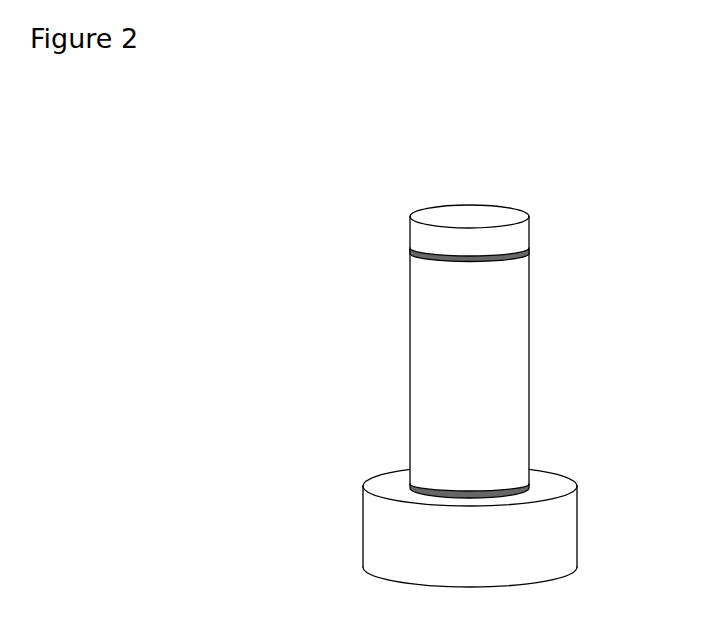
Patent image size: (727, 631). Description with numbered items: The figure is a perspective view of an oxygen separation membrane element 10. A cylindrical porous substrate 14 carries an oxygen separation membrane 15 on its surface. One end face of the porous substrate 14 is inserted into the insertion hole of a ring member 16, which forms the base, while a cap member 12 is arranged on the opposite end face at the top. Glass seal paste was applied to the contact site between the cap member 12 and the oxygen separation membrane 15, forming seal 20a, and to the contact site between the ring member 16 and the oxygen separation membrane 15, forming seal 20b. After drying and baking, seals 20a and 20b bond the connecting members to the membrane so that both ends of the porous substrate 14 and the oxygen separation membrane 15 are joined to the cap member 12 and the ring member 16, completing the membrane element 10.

The membrane element 10 is at (321, 251).
The cap member 12 is at (505, 215).
The cylindrical porous substrate 14 is at (530, 347).
The oxygen separation membrane 15 is at (410, 342).
The ring member 16 is at (568, 535).
The seal 20a is at (495, 263).
The seal 20b is at (485, 485).